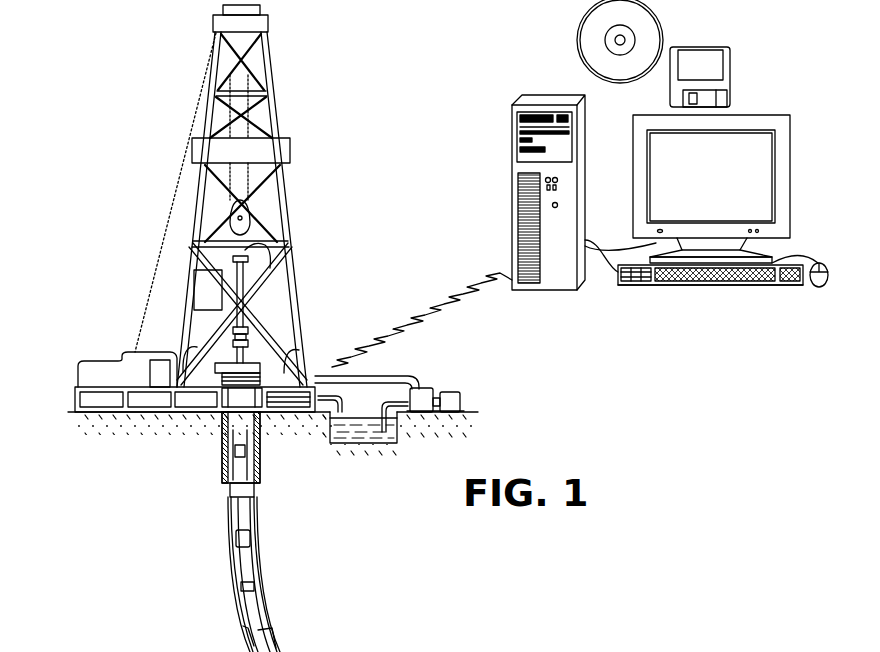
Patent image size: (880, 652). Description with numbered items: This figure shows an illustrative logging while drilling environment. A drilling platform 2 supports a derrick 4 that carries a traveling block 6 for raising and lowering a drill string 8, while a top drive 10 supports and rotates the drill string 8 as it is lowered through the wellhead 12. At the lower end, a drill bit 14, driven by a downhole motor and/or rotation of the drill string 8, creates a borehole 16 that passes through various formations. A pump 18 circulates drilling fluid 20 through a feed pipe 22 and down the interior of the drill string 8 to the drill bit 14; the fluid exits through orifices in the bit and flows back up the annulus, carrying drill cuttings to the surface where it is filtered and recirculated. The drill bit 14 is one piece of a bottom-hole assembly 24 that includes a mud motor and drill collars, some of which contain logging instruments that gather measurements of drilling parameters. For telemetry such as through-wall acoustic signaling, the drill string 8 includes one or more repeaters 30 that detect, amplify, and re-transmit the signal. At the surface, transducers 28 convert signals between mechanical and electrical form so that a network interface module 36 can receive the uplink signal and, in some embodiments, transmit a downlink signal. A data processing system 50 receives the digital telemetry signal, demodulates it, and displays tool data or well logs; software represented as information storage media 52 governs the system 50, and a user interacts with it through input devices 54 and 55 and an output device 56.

The drilling platform 2 is at (76, 389).
The derrick 4 is at (276, 103).
The traveling block 6 is at (247, 216).
The drill string 8 is at (247, 523).
The top drive 10 is at (240, 277).
The wellhead 12 is at (257, 363).
The drill bit 14 is at (297, 640).
The borehole 16 is at (257, 525).
The pump 18 is at (421, 388).
The drilling fluid 20 is at (345, 435).
The feed pipe 22 is at (370, 377).
The bottom-hole assembly 24 is at (244, 636).
The transducers 28 is at (247, 330).
The repeaters 30 is at (233, 543).
The network interface module 36 is at (167, 360).
The data processing system 50 is at (586, 213).
The non-transitory information storage media 52 is at (687, 46).
The input device 54 is at (743, 286).
The input device 55 is at (819, 287).
The output device 56 is at (788, 203).